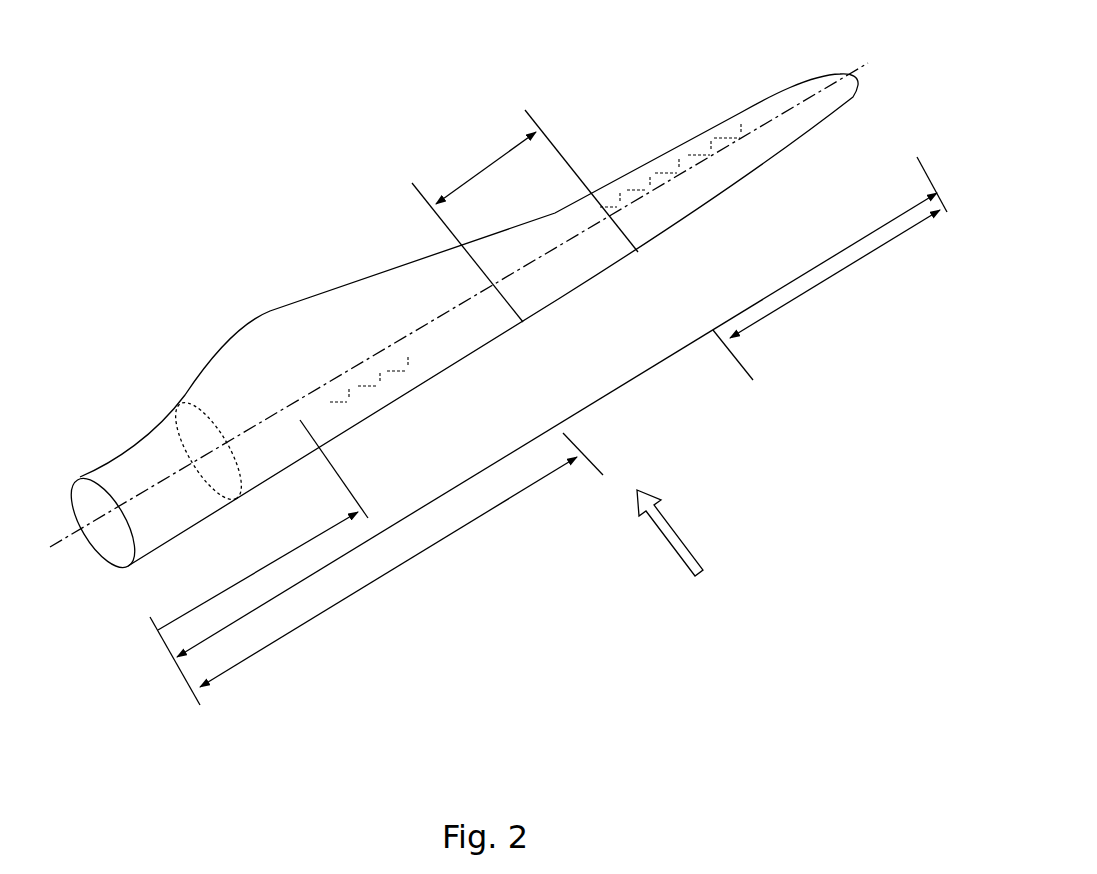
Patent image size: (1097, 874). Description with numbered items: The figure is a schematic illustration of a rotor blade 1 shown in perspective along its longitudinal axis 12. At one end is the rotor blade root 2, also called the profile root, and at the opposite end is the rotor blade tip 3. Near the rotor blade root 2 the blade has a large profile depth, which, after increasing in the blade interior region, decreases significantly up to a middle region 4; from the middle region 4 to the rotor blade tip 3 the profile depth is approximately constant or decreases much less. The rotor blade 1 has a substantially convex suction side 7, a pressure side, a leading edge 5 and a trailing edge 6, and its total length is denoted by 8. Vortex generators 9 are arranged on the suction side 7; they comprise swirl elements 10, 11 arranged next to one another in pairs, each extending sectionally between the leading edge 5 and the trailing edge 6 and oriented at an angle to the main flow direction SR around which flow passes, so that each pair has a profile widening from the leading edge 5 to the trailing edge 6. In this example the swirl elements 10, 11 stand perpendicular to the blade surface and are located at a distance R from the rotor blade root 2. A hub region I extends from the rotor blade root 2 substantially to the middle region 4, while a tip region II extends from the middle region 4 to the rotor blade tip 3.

The rotor blade 1 is at (499, 391).
The rotor blade root 2 is at (155, 556).
The rotor blade tip 3 is at (861, 103).
The middle region 4 is at (492, 166).
The leading edge 5 is at (633, 250).
The trailing edge 6 is at (423, 262).
The suction side 7 is at (256, 338).
The total length 8 is at (610, 390).
The vortex generators 9 is at (697, 147).
The swirl element 10 is at (305, 419).
The swirl element 11 is at (740, 127).
The longitudinal axis 12 is at (53, 543).
The distance R is at (300, 547).
The hub region I is at (423, 550).
The tip region II is at (782, 310).
The main flow direction SR is at (683, 540).